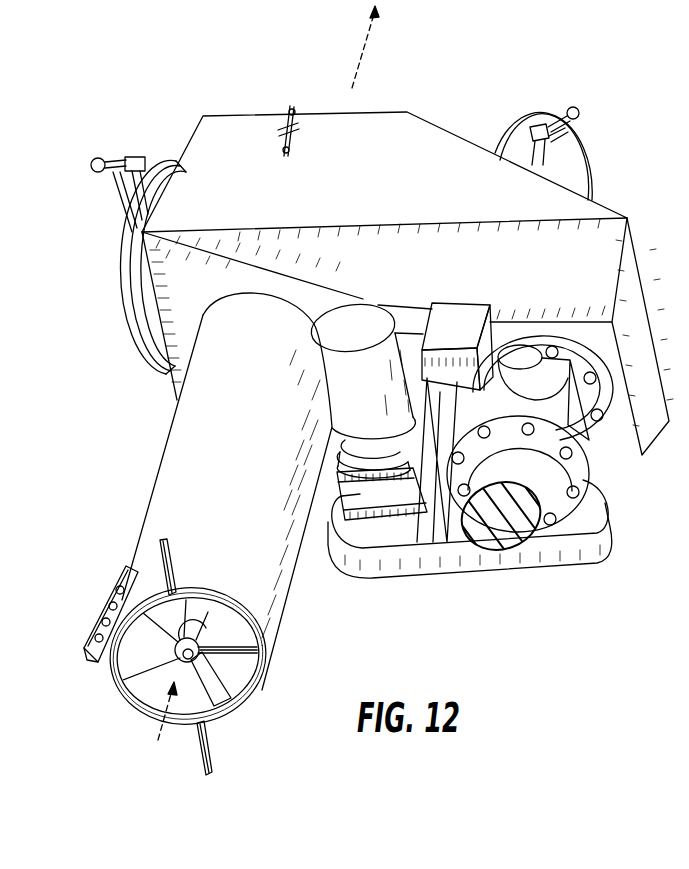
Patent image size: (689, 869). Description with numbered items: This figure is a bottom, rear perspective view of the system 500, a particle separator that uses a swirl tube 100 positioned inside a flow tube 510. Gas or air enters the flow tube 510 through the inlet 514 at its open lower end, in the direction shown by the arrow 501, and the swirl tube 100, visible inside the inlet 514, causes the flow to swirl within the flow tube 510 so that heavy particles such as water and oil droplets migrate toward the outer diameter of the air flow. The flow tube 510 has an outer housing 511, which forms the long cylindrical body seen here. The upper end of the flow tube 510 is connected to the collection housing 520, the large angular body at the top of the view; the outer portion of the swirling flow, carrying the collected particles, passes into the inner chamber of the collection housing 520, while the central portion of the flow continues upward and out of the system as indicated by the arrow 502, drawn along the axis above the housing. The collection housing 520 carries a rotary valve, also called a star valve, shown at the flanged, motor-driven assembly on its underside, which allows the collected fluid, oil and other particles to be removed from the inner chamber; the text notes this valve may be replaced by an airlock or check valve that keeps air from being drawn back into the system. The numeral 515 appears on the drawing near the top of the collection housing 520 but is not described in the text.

The system 500 is at (160, 69).
The arrow 502 is at (360, 50).
The housing top surface 515 is at (375, 111).
The collection housing 520 is at (378, 182).
The flow tube 510 is at (254, 482).
The outer housing 511 is at (165, 450).
The swirl tube 100 is at (114, 690).
The arrow 501 is at (158, 740).
The inlet 514 is at (238, 720).